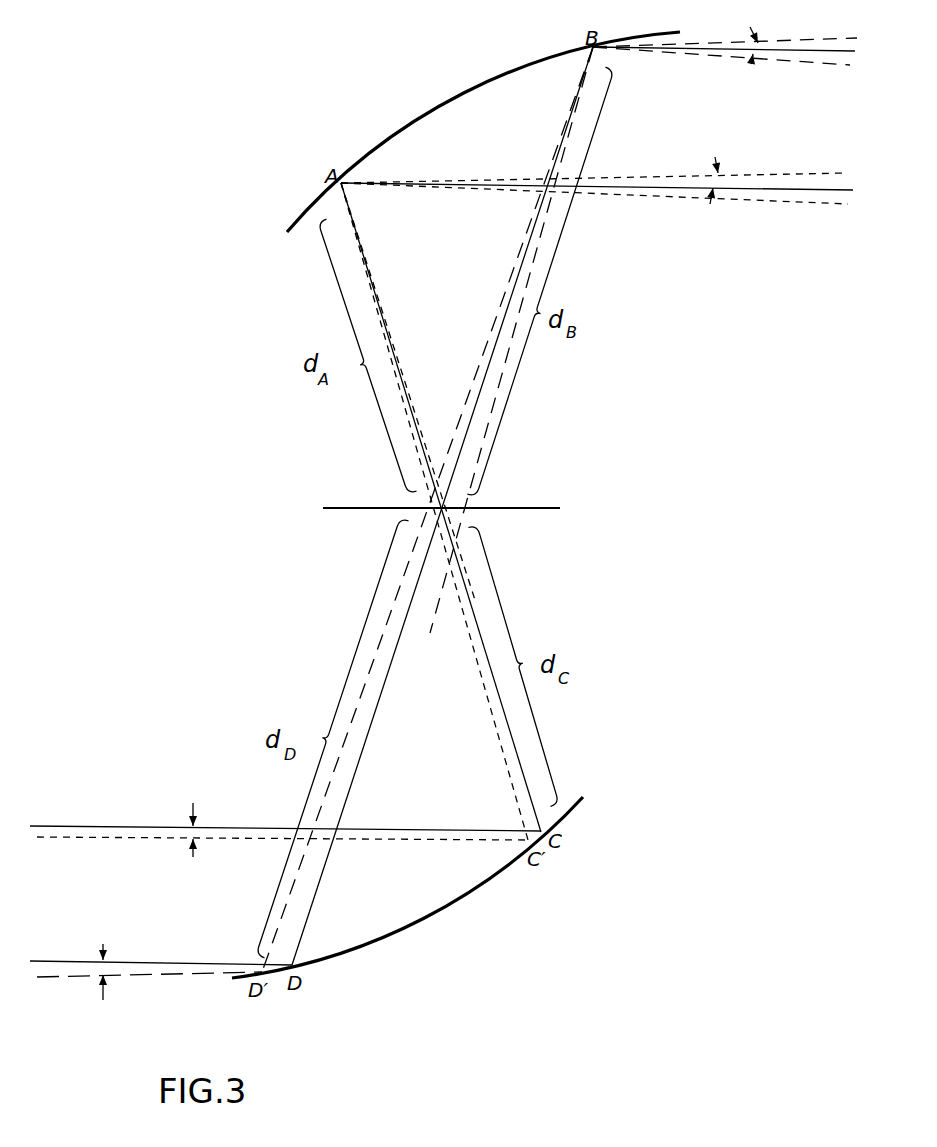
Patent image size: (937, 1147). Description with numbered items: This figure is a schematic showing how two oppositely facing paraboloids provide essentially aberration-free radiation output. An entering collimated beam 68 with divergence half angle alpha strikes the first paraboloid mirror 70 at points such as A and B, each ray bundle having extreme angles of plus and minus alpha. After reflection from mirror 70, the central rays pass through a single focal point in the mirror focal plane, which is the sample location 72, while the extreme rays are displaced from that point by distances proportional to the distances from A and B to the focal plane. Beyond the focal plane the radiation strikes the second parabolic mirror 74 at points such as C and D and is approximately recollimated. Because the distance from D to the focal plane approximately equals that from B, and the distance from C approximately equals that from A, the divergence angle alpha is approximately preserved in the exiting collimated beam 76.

The entering collimated beam 68 is at (780, 112).
The first paraboloid mirror 70 is at (480, 84).
The sample location 72 is at (486, 507).
The second parabolic mirror 74 is at (436, 915).
The exiting collimated beam 76 is at (88, 895).